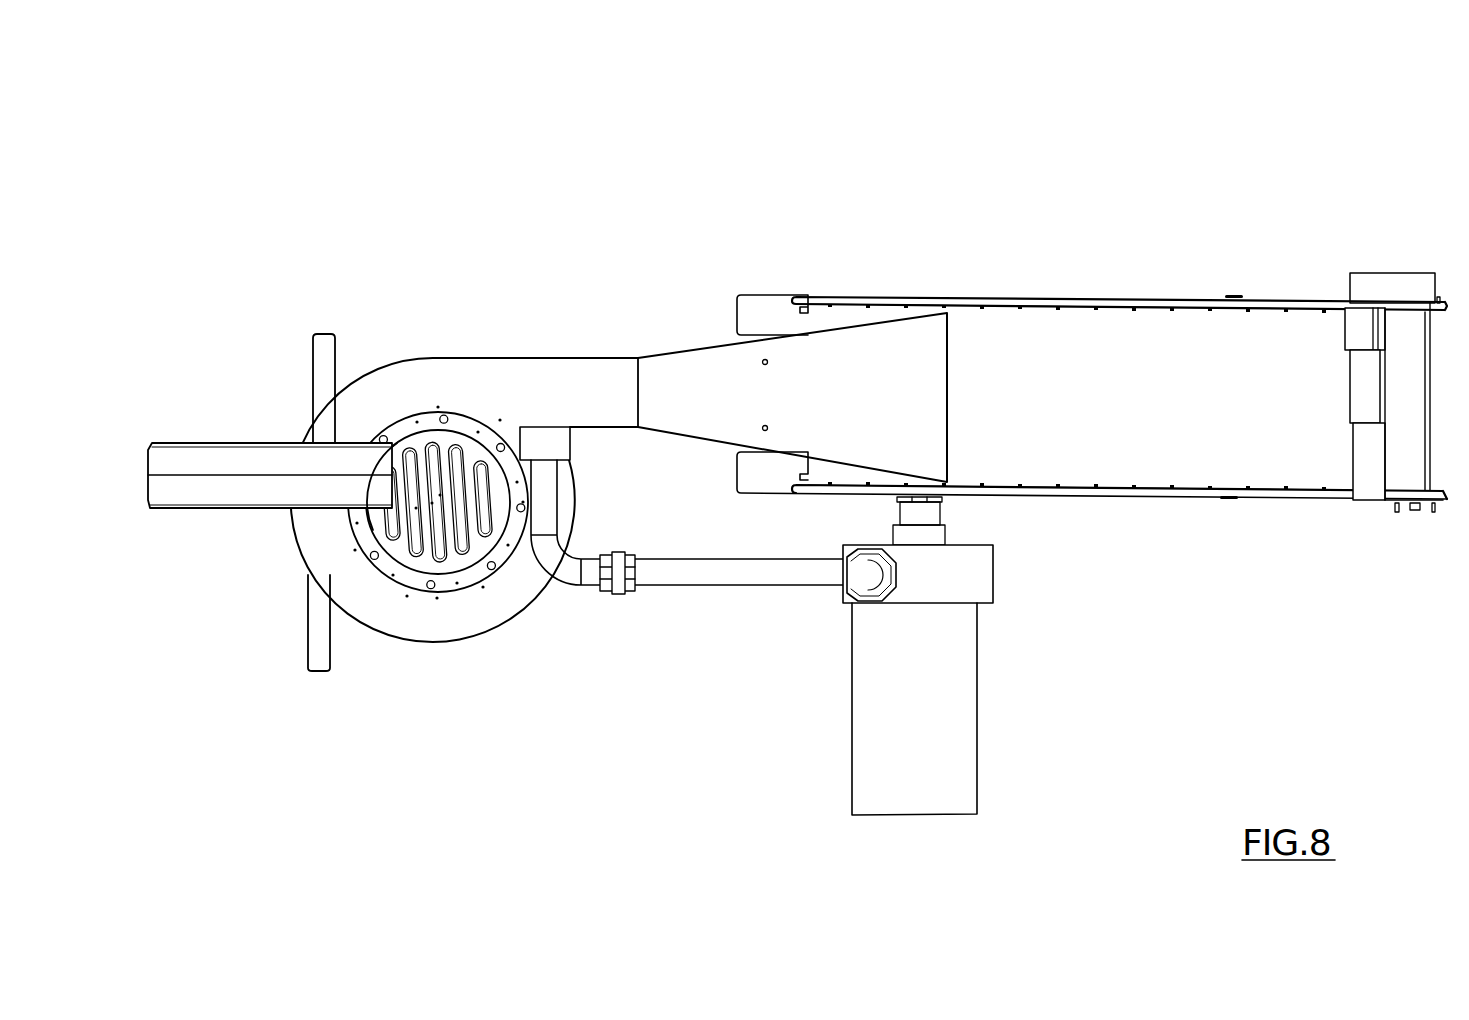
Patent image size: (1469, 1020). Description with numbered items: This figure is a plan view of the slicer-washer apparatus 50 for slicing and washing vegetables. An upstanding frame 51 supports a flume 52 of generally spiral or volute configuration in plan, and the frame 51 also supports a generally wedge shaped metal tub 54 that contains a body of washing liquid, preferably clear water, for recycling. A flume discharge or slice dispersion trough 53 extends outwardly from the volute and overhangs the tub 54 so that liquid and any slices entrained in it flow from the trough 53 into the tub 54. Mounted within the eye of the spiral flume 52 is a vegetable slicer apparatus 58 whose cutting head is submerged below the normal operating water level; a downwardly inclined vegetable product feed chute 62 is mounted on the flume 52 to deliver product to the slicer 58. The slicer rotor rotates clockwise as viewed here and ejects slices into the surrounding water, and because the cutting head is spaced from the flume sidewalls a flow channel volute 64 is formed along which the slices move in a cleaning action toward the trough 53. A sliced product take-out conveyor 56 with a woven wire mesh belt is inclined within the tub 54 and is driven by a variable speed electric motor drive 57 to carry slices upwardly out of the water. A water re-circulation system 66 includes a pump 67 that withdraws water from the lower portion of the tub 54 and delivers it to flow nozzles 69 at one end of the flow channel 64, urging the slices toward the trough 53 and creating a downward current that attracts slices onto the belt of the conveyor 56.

The slicer-washer apparatus 50 is at (1092, 353).
The upstanding frame 51 is at (312, 379).
The flume 52 is at (393, 363).
The flume discharge trough 53 is at (590, 358).
The tub 54 is at (1090, 498).
The sliced product take-out conveyor 56 is at (1073, 392).
The electric motor drive 57 is at (1348, 377).
The vegetable slicer apparatus 58 is at (430, 594).
The vegetable product feed chute 62 is at (180, 508).
The flow channel volute 64 is at (517, 388).
The water re-circulation system 66 is at (755, 588).
The pump 67 is at (947, 661).
The flow nozzles 69 is at (553, 443).